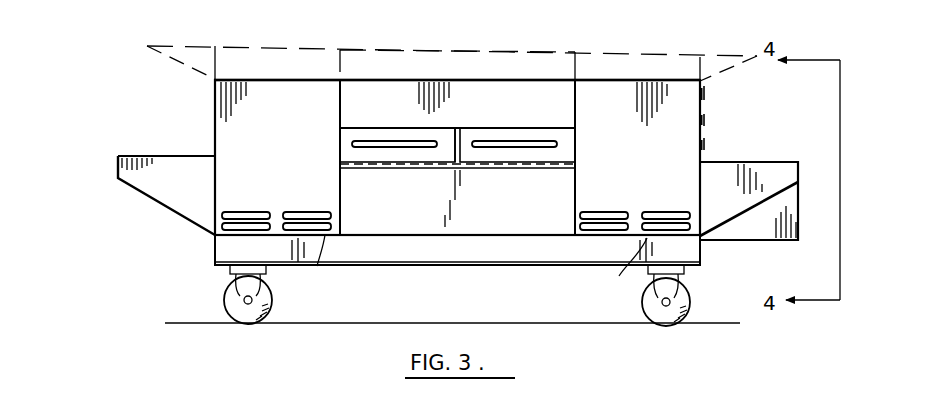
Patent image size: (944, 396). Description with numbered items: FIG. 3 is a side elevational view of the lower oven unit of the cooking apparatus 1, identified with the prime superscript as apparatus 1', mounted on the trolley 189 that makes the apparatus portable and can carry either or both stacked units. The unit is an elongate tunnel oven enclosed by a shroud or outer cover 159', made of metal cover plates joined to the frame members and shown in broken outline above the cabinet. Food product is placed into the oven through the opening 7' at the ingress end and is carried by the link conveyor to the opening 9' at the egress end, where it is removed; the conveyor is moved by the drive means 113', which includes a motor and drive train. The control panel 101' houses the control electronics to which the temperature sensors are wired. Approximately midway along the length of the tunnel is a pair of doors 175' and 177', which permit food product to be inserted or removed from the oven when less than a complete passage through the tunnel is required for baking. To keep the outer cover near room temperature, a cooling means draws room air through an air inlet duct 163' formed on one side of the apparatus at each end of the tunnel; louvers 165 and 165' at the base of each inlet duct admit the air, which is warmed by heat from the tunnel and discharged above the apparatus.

The cooking apparatus 1 is at (428, 155).
The cooking apparatus (second unit) 1' is at (145, 205).
The opening at egress end 9' is at (425, 107).
The shroud or outer cover 159' is at (457, 74).
The control panel 101' is at (676, 157).
The opening at ingress end 7' is at (724, 118).
The drive means 113' is at (785, 201).
The air inlet duct 163' is at (457, 231).
The trolley 189 is at (215, 266).
The louvers 165 is at (297, 270).
The louvers 165' is at (603, 273).
The door 177' is at (397, 177).
The door 175' is at (517, 177).